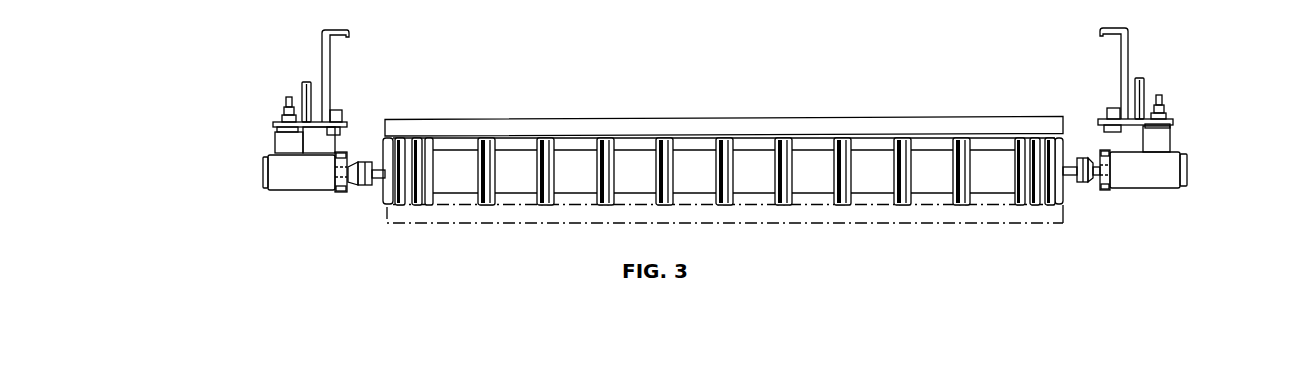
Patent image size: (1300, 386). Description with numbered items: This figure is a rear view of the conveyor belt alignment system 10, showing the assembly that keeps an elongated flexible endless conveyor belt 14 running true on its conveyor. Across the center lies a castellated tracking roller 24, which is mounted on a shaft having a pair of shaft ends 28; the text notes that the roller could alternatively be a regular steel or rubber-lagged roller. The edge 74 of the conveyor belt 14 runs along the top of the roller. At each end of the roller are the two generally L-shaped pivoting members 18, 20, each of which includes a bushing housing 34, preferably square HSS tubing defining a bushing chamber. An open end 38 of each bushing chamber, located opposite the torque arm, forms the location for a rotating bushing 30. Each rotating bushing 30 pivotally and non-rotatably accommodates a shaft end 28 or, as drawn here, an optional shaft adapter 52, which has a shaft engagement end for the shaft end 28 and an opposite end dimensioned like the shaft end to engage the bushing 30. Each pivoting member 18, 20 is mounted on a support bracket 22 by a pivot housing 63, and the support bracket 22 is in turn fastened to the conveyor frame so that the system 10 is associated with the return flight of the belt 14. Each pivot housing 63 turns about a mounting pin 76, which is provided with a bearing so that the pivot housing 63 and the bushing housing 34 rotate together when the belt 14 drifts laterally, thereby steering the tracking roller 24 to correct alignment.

The conveyor belt alignment system 10 is at (1172, 29).
The conveyor belt 14 is at (847, 125).
The pivoting member 18 is at (1178, 168).
The pivoting member 20 is at (271, 190).
The support bracket 22 is at (302, 86).
The castellated tracking roller 24 is at (852, 196).
The shaft end 28 is at (382, 169).
The rotating bushing 30 is at (338, 152).
The bushing housing 34 is at (313, 190).
The open end 38 is at (350, 193).
The shaft adapter 52 is at (366, 186).
The pivot housing 63 is at (280, 148).
The belt edge 74 is at (384, 120).
The mounting pin 76 is at (287, 98).